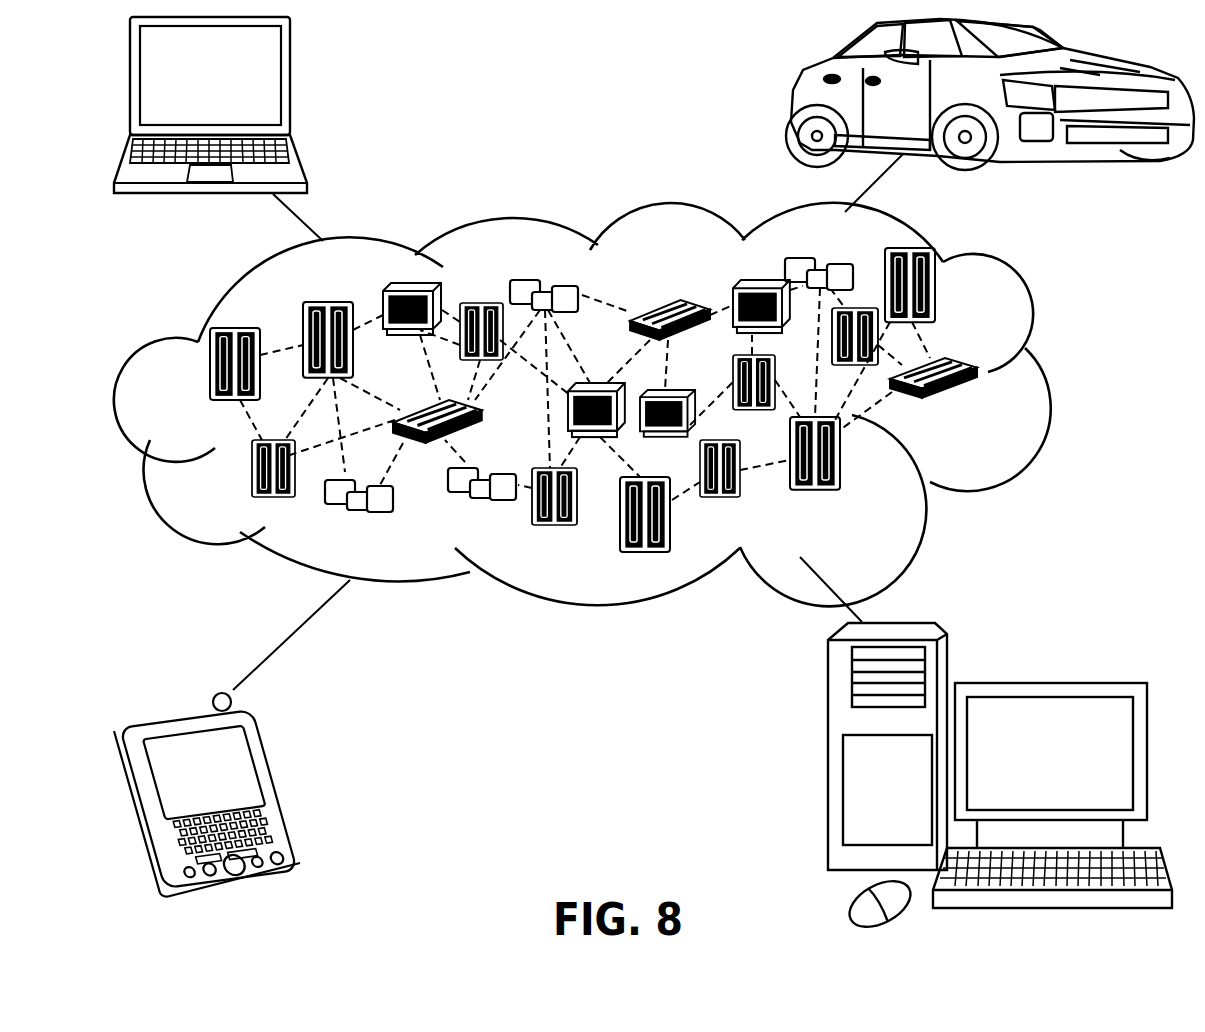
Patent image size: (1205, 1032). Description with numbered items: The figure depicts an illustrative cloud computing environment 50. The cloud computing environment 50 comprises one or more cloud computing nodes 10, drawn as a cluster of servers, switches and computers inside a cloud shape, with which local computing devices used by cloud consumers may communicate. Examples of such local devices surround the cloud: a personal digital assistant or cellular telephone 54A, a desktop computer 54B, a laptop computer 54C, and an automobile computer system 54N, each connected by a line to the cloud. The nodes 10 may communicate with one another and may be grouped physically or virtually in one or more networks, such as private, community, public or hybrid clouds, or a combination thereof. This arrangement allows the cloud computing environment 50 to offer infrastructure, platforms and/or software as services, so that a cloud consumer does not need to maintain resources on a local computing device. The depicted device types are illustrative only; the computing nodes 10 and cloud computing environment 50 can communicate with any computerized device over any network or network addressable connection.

The cloud computing nodes 10 is at (990, 412).
The cloud computing environment 50 is at (617, 405).
The personal digital assistant (PDA) or cellular telephone 54A is at (278, 792).
The desktop computer 54B is at (1048, 684).
The laptop computer 54C is at (290, 86).
The automobile computer system 54N is at (797, 100).